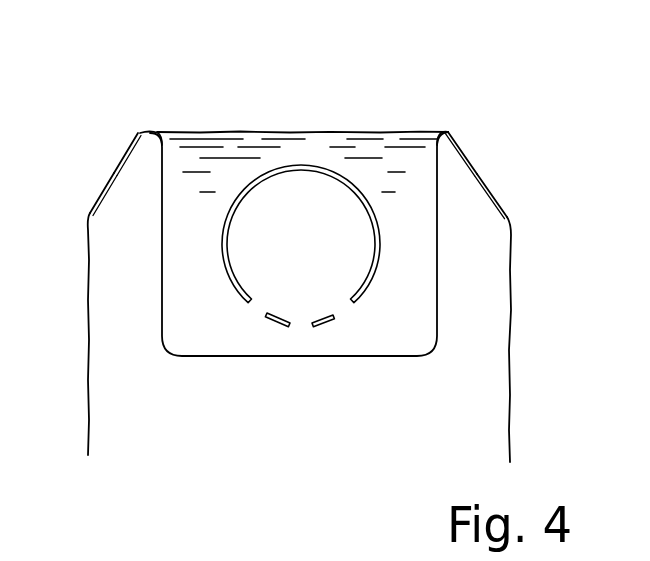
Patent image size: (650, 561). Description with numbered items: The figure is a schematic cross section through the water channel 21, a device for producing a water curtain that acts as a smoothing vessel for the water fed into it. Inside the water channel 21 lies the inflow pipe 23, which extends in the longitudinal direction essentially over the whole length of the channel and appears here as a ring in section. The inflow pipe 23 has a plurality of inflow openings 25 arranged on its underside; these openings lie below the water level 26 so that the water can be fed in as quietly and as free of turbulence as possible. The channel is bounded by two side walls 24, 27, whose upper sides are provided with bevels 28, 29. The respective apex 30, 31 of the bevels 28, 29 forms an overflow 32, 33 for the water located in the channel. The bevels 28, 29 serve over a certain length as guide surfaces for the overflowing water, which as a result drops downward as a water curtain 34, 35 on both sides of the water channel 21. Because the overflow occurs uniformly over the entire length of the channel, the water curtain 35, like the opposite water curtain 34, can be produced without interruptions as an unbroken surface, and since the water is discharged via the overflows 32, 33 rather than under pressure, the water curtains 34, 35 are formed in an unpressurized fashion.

The water channel 21 is at (508, 110).
The inflow pipe 23 is at (315, 168).
The side wall 24 is at (437, 283).
The inflow openings 25 is at (342, 310).
The water level 26 is at (288, 132).
The side wall 27 is at (162, 277).
The bevel 28 is at (486, 183).
The bevel 29 is at (110, 183).
The apex 30 is at (448, 132).
The apex 31 is at (157, 132).
The overflow 32 is at (452, 130).
The overflow 33 is at (138, 132).
The water curtain 34 is at (89, 392).
The water curtain 35 is at (508, 393).